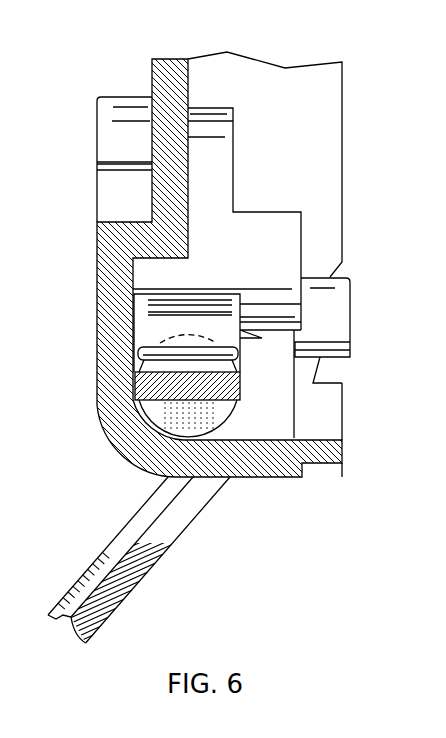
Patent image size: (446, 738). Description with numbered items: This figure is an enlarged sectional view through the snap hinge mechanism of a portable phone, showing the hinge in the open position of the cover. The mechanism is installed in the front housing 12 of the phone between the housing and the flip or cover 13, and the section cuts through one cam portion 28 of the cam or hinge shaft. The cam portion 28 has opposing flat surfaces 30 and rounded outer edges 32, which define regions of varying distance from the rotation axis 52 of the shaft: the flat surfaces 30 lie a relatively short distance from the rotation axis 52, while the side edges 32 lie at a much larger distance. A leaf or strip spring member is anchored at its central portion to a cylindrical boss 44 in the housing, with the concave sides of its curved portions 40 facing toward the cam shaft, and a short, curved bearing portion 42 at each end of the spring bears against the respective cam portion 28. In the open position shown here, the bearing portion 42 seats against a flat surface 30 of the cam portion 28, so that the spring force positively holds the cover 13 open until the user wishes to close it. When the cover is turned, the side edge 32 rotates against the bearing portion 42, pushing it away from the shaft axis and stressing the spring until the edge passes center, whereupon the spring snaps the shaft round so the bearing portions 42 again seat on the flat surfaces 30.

The front housing 12 is at (163, 73).
The flip or cover 13 is at (104, 554).
The cam portion 28 is at (240, 388).
The flat surface 30 is at (155, 372).
The rounded outer edge 32 is at (137, 380).
The curved portion 40 is at (188, 300).
The curved bearing portion 42 is at (183, 360).
The cylindrical boss 44 is at (287, 233).
The rotation axis 52 is at (188, 385).